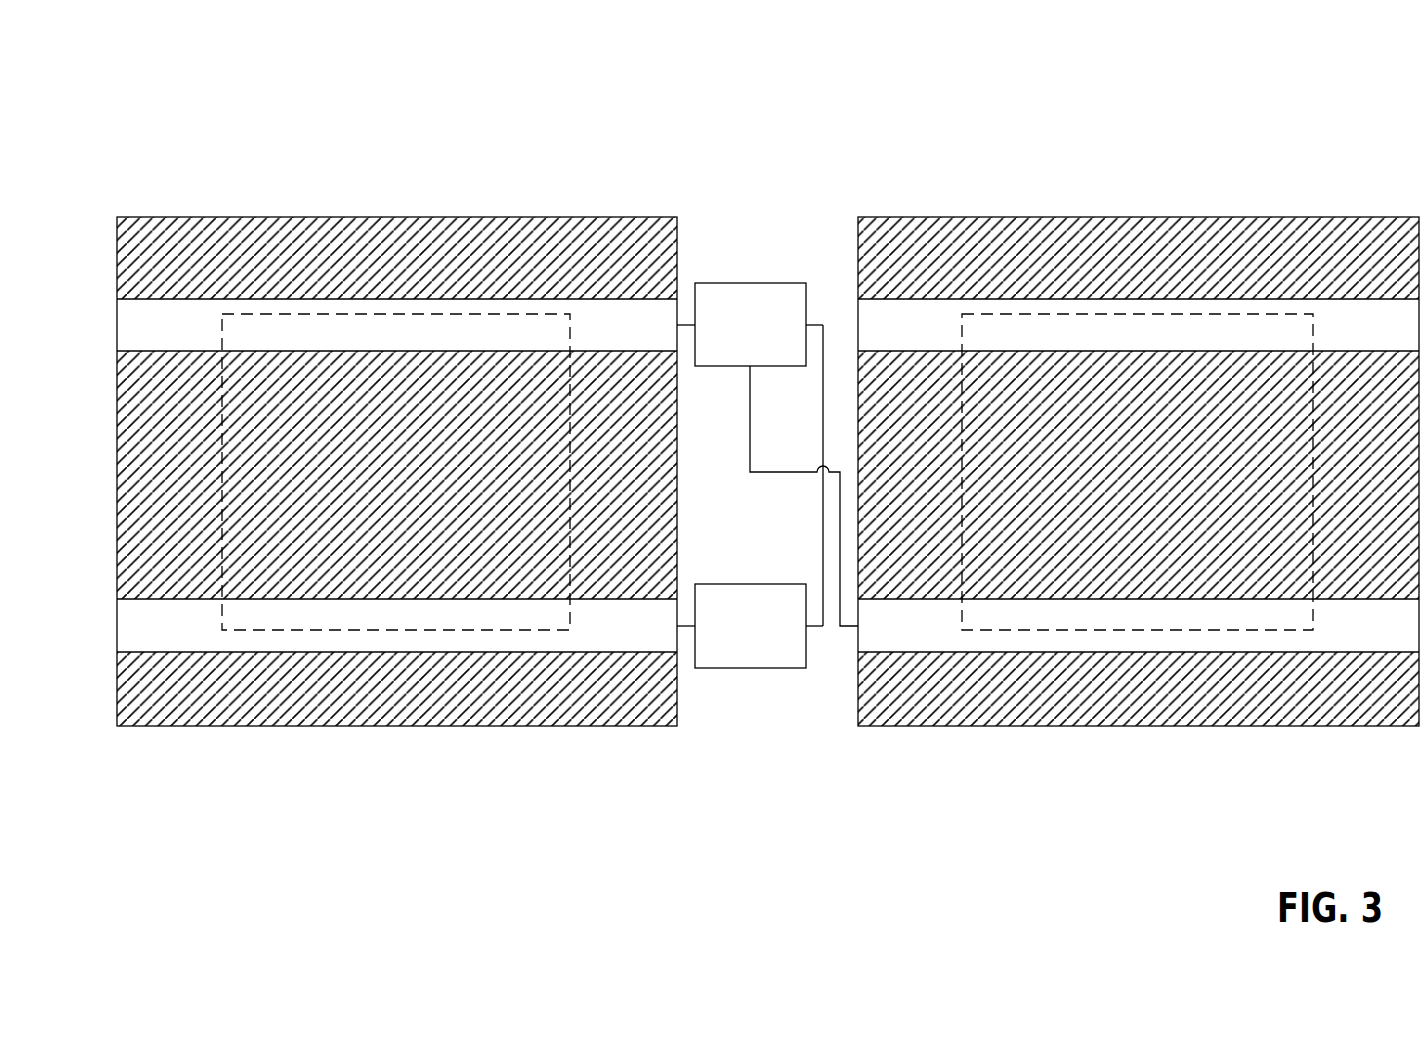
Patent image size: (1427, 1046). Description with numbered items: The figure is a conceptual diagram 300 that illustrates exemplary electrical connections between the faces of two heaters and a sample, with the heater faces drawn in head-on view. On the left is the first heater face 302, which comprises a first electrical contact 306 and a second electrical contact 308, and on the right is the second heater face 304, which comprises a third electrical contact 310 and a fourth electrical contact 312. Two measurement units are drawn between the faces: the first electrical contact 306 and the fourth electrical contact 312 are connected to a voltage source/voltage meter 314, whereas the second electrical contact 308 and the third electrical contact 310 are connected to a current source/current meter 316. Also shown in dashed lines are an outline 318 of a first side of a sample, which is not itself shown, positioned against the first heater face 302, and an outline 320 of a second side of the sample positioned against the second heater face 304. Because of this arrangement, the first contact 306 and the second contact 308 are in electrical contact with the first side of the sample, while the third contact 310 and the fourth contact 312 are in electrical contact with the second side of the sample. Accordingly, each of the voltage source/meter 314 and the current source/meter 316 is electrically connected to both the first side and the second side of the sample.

The conceptual diagram 300 is at (192, 40).
The first heater face 302 is at (397, 217).
The second heater face 304 is at (1140, 217).
The first electrical contact 306 is at (647, 336).
The second electrical contact 308 is at (647, 640).
The third electrical contact 310 is at (1392, 336).
The fourth electrical contact 312 is at (1392, 640).
The voltage source/voltage meter 314 is at (753, 283).
The current source/current meter 316 is at (750, 584).
The outline of a first side of a sample 318 is at (398, 630).
The outline of a second side of the sample 320 is at (1112, 630).